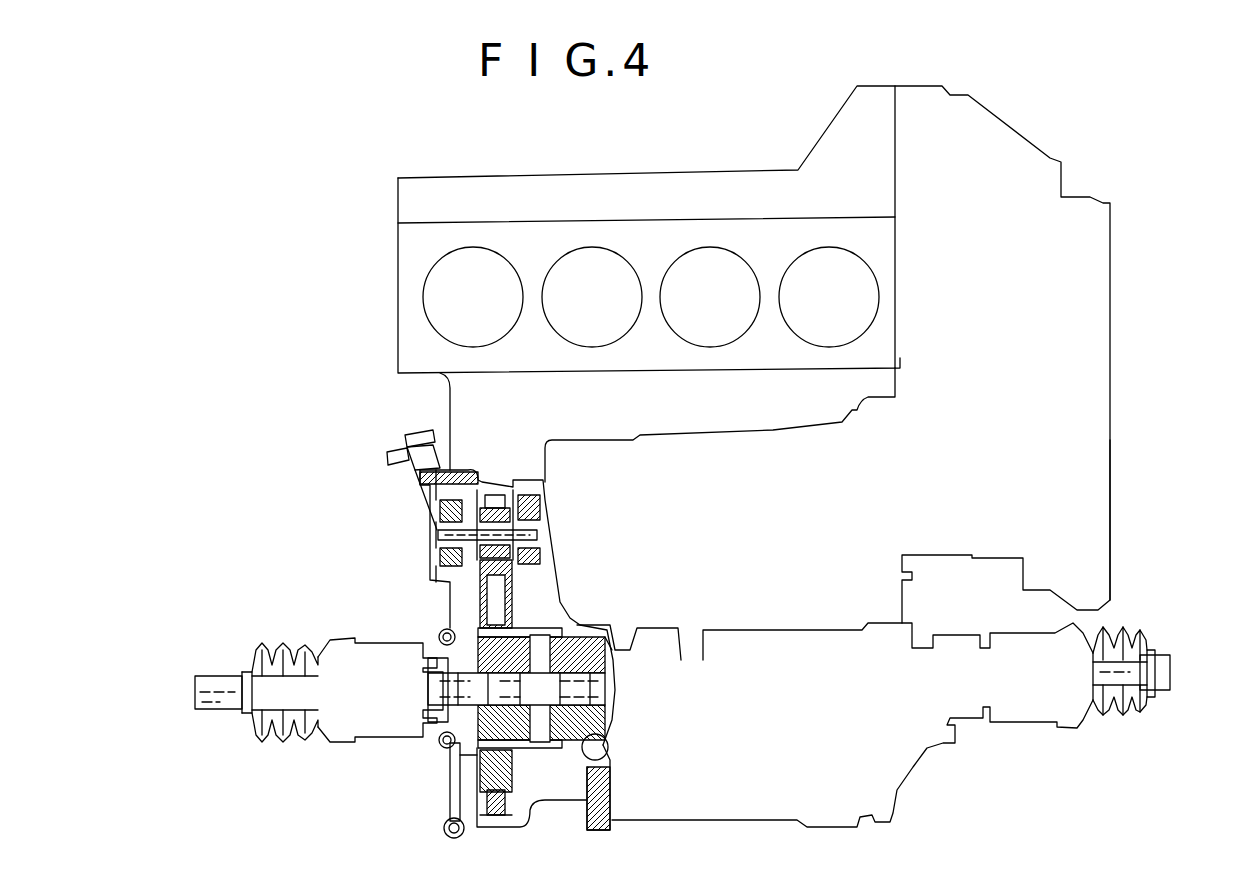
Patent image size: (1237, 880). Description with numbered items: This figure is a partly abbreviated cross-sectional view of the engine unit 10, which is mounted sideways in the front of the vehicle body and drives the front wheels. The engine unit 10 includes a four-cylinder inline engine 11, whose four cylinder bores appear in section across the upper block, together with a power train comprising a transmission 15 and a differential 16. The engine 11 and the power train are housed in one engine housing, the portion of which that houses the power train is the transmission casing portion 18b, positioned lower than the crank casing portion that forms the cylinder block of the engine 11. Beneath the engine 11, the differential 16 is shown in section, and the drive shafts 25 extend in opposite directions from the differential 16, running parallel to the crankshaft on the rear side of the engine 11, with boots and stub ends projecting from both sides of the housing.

The engine unit 10 is at (610, 137).
The four-cylinder inline engine 11 is at (779, 158).
The transmission 15 is at (1113, 428).
The differential 16 is at (515, 830).
The transmission casing portion 18b is at (1113, 512).
The drive shafts 25 is at (315, 724).